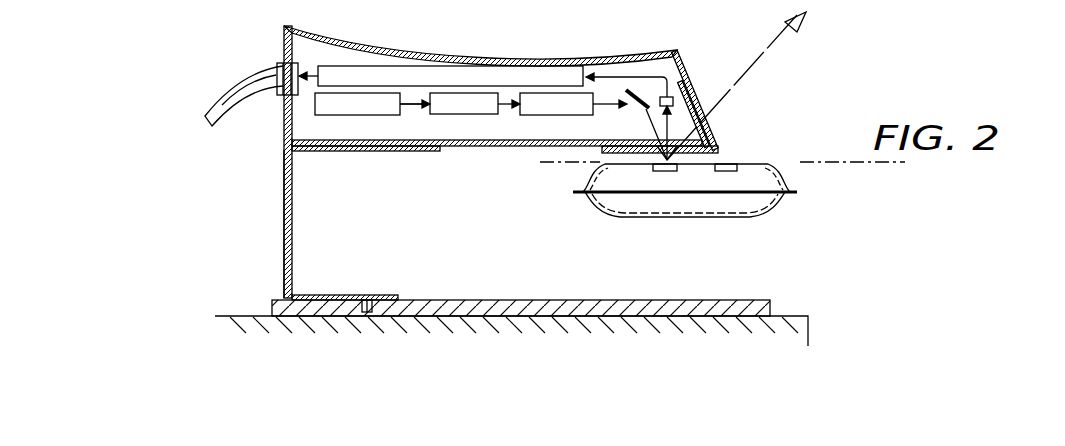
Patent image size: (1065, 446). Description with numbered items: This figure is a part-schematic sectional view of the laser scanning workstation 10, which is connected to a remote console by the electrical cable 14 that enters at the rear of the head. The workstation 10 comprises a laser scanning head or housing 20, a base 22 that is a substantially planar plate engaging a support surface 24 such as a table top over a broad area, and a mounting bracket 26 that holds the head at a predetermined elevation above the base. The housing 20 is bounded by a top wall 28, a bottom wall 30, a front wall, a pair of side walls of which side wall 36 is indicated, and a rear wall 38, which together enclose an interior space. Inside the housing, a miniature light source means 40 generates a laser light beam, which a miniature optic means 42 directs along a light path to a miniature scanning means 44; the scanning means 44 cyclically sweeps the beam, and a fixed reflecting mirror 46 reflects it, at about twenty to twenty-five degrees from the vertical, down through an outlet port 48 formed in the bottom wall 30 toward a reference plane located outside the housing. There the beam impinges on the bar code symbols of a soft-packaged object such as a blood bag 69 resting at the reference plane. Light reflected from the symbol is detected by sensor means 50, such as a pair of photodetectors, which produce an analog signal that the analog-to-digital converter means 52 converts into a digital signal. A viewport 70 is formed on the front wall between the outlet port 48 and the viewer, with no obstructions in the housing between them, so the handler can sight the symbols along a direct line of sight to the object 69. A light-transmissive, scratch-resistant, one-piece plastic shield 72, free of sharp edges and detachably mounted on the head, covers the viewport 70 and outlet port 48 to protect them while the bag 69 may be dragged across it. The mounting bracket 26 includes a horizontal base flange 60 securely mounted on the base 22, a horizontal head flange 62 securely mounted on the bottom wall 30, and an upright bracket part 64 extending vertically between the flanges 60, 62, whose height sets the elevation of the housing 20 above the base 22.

The laser scanning workstation 10 is at (261, 245).
The electrical cable 14 is at (231, 116).
The laser scanning head or housing 20 is at (509, 110).
The base 22 is at (690, 288).
The support surface 24 is at (795, 318).
The mounting bracket 26 is at (292, 258).
The top wall 28 is at (512, 58).
The bottom wall 30 is at (510, 150).
The side wall 36 is at (462, 137).
The rear wall 38 is at (284, 124).
The light source means 40 is at (399, 116).
The optic means 42 is at (484, 115).
The scanning means 44 is at (563, 116).
The fixed reflecting mirror 46 is at (630, 92).
The outlet port 48 is at (647, 144).
The sensor means 50 is at (684, 62).
The analog-to-digital converter means 52 is at (417, 66).
The horizontal base flange 60 is at (343, 294).
The horizontal head flange 62 is at (392, 152).
The upright bracket part 64 is at (284, 196).
The blood bag 69 is at (746, 167).
The viewport 70 is at (712, 92).
The protective shield 72 is at (720, 132).